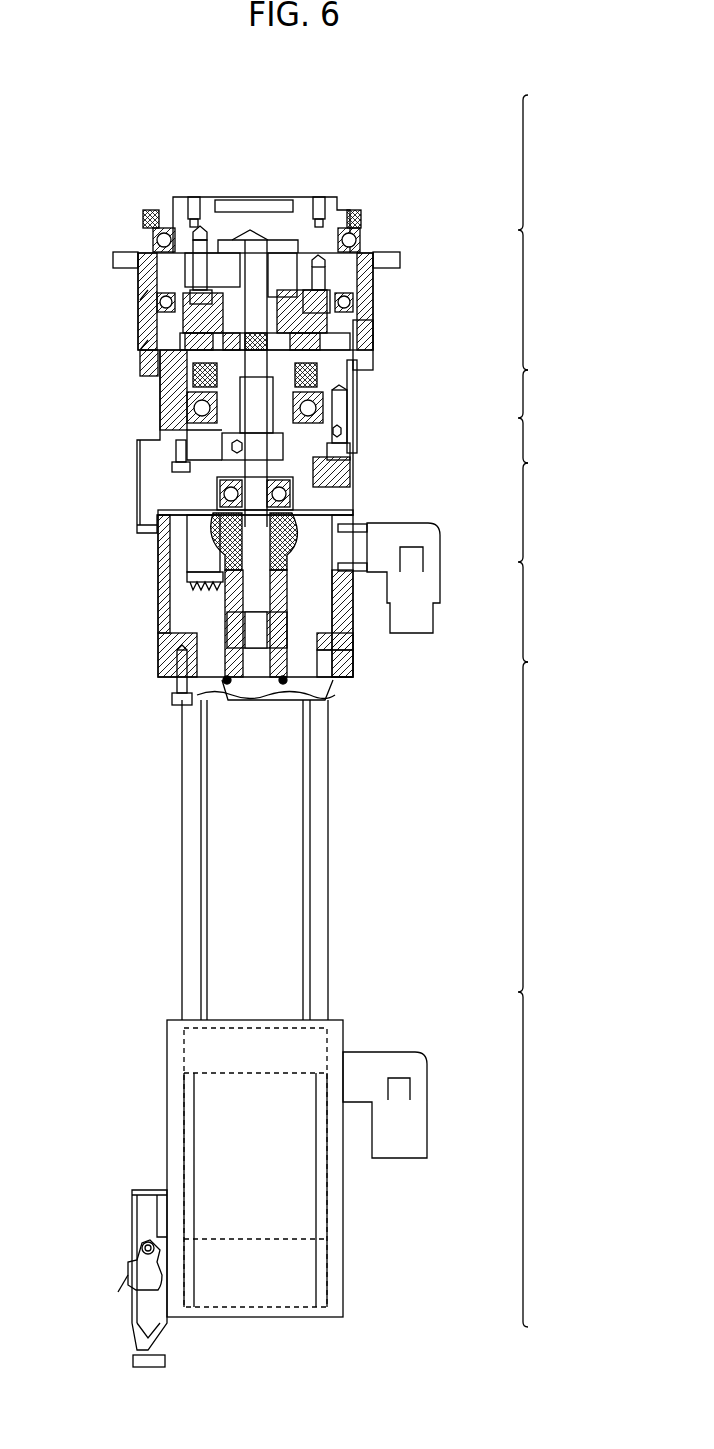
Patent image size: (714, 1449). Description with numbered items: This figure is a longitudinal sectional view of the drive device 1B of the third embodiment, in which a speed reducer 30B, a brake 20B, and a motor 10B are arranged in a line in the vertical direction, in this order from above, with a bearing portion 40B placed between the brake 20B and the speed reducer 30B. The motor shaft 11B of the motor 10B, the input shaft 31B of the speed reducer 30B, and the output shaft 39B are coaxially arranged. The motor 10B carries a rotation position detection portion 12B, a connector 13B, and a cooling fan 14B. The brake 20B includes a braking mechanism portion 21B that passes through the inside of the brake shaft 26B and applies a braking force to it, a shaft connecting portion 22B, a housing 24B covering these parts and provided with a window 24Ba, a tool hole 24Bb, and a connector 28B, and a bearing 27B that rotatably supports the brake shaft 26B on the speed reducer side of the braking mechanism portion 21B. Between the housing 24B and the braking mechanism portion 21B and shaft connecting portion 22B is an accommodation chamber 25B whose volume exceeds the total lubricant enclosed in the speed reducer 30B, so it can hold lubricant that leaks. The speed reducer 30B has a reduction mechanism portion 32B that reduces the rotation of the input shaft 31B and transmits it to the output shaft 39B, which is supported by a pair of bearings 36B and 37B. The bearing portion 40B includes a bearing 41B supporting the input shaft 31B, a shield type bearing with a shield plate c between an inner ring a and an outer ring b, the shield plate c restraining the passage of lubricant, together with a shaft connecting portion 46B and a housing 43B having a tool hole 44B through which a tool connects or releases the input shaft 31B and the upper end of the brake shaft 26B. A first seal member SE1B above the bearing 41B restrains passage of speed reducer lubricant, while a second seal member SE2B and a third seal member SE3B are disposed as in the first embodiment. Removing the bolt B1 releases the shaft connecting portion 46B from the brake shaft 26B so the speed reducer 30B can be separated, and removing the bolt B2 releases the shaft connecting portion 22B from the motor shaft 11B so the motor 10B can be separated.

The drive device 1B is at (577, 98).
The motor 10B is at (381, 994).
The motor shaft 11B is at (240, 700).
The rotation position detection portion 12B is at (328, 1044).
The connector 13B is at (425, 1130).
The cooling fan 14B is at (328, 1276).
The brake 20B is at (549, 562).
The braking mechanism portion 21B is at (340, 530).
The shaft connecting portion 22B is at (185, 675).
The housing 24B is at (175, 640).
The window 24Ba is at (228, 568).
The tool hole 24Bb is at (353, 666).
The accommodation chamber 25B is at (335, 640).
The brake shaft 26B is at (240, 630).
The bearing 27B is at (292, 500).
The connector 28B is at (440, 582).
The speed reducer 30B is at (549, 232).
The input shaft 31B is at (355, 340).
The reduction mechanism portion 32B is at (148, 292).
The bearing 36B is at (160, 240).
The bearing 37B is at (200, 240).
The output shaft 39B is at (303, 203).
The bearing portion 40B is at (549, 416).
The bearing 41B is at (178, 415).
The housing 43B is at (188, 440).
The tool hole 44B is at (355, 460).
The shaft connecting portion 46B is at (215, 478).
The first seal member SE1B is at (195, 372).
The second seal member SE2B is at (226, 682).
The third seal member SE3B is at (150, 216).
The bolt B1 is at (225, 520).
The bolt B2 is at (172, 700).
The inner ring a is at (190, 412).
The outer ring b is at (185, 405).
The shield plate c is at (182, 392).